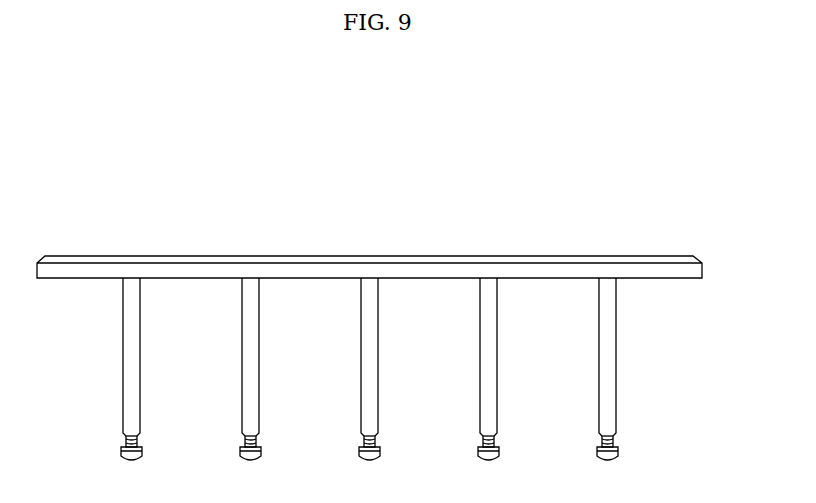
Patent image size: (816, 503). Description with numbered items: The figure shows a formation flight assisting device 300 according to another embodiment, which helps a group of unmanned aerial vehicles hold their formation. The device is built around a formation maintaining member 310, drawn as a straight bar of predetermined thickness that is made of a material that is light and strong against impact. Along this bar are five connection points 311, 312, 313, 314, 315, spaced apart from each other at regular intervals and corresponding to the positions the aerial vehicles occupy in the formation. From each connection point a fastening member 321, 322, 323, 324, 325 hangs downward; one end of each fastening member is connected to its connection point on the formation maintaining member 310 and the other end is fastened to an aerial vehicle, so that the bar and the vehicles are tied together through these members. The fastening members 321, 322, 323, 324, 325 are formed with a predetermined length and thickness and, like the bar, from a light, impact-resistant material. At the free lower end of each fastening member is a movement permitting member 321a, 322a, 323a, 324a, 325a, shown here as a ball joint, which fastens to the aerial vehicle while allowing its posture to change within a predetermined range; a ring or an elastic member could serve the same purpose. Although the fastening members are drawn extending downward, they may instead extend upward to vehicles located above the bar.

The formation flight assisting device 300 is at (664, 165).
The formation maintaining member 310 is at (683, 256).
The connection point 311 is at (123, 279).
The connection point 312 is at (242, 279).
The connection point 313 is at (361, 279).
The connection point 314 is at (480, 279).
The connection point 315 is at (599, 279).
The fastening member 321 is at (123, 349).
The fastening member 322 is at (242, 349).
The fastening member 323 is at (361, 349).
The fastening member 324 is at (480, 349).
The fastening member 325 is at (599, 349).
The movement permitting member 321a is at (121, 455).
The movement permitting member 322a is at (240, 455).
The movement permitting member 323a is at (359, 455).
The movement permitting member 324a is at (478, 455).
The movement permitting member 325a is at (597, 455).